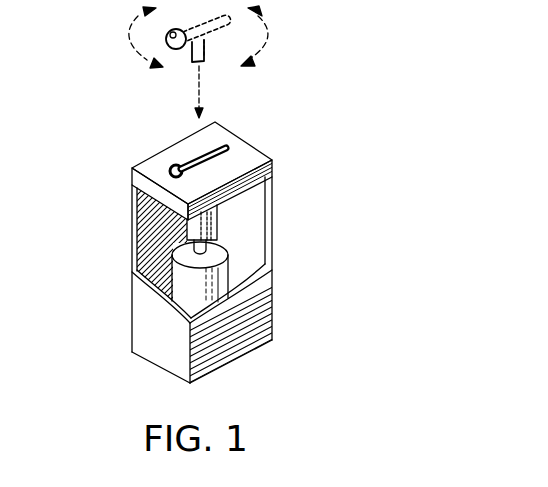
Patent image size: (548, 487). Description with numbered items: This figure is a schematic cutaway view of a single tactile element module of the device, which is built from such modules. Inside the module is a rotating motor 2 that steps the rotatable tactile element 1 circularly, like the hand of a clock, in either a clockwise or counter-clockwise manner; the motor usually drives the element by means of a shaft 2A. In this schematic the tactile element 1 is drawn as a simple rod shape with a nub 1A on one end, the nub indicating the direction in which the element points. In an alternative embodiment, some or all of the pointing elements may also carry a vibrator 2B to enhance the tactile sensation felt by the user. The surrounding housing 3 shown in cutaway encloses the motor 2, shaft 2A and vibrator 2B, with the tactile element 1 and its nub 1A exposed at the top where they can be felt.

The rotatable tactile element 1 is at (177, 165).
The nub 1A is at (170, 164).
The rotating motor 2 is at (232, 256).
The shaft 2A is at (220, 240).
The vibrator 2B is at (324, 217).
The housing 3 is at (132, 305).